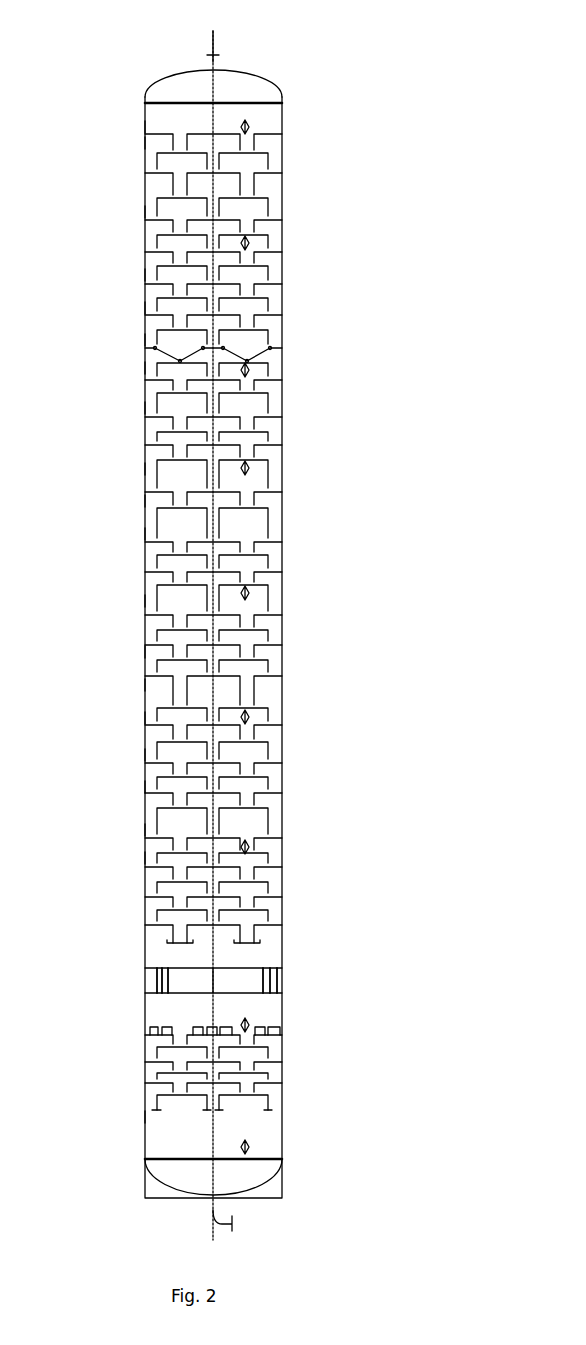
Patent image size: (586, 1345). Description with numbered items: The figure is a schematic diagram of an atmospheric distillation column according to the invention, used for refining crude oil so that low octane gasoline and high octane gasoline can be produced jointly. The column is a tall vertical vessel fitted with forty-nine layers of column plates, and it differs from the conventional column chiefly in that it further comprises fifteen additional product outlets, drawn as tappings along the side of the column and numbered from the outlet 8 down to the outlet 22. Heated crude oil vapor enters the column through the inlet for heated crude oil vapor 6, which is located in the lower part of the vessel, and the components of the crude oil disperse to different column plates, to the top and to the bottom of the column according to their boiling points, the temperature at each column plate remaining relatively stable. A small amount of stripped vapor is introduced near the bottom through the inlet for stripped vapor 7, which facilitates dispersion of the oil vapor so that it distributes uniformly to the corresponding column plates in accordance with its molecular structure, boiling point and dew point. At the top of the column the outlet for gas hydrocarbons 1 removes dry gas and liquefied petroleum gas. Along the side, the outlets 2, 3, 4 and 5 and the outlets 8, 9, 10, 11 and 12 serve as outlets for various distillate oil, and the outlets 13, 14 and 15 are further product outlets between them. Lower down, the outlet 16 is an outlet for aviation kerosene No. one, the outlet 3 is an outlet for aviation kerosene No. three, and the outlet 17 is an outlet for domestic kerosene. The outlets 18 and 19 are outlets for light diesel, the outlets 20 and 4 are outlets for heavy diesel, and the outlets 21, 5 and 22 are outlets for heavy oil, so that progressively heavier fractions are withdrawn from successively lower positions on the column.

The outlet for gas hydrocarbons 1 is at (213, 35).
The outlet for distillate oil 2 is at (132, 311).
The outlet for aviation kerosene No. 3 is at (132, 537).
The outlet for heavy diesel 4 is at (132, 758).
The outlet for heavy oil 5 is at (132, 833).
The inlet for heated crude oil vapor 6 is at (132, 983).
The inlet for stripped vapor 7 is at (132, 1120).
The product outlet for distillate oil 8 is at (132, 130).
The product outlet for distillate oil 9 is at (132, 146).
The product outlet for distillate oil 10 is at (132, 215).
The product outlet for distillate oil 11 is at (132, 278).
The product outlet for distillate oil 12 is at (132, 343).
The product outlet 13 is at (132, 371).
The product outlet 14 is at (132, 411).
The product outlet 15 is at (132, 472).
The outlet for aviation kerosene No. 1 16 is at (132, 504).
The outlet for domestic kerosene 17 is at (132, 604).
The outlet for light diesel 18 is at (132, 655).
The outlet for light diesel 19 is at (132, 688).
The outlet for heavy diesel 20 is at (132, 721).
The outlet for heavy oil 21 is at (132, 790).
The outlet for heavy oil 22 is at (132, 861).